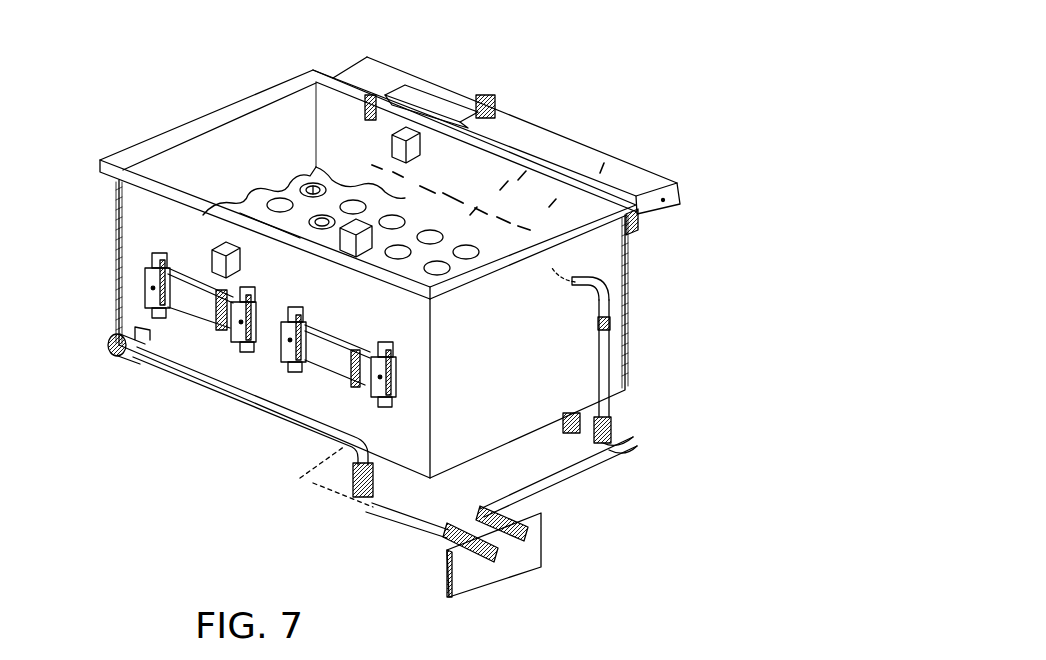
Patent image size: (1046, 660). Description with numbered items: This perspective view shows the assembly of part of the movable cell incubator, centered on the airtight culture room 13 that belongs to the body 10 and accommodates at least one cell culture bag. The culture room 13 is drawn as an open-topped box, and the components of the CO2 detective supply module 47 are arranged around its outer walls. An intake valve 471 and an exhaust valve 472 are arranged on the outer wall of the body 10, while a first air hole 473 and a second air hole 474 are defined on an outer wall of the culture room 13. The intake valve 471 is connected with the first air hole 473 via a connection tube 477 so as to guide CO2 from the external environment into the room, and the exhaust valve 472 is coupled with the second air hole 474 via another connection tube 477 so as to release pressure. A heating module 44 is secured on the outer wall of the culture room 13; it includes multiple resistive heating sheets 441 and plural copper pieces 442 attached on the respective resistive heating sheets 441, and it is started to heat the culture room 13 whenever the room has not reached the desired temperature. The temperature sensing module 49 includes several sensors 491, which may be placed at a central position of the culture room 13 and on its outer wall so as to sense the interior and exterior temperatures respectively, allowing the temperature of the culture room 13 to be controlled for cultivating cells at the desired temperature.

The body 10 is at (556, 527).
The culture room 13 is at (473, 263).
The heating module 44 is at (134, 243).
The resistive heating sheets 441 is at (593, 173).
The copper pieces 442 is at (550, 160).
The CO2 detective supply module 47 is at (383, 450).
The intake valve 471 is at (487, 560).
The exhaust valve 472 is at (523, 556).
The first air hole 473 is at (150, 335).
The second air hole 474 is at (565, 286).
The connection tube 477 is at (287, 423).
The temperature sensing module 49 is at (283, 139).
The sensors 491 is at (207, 250).